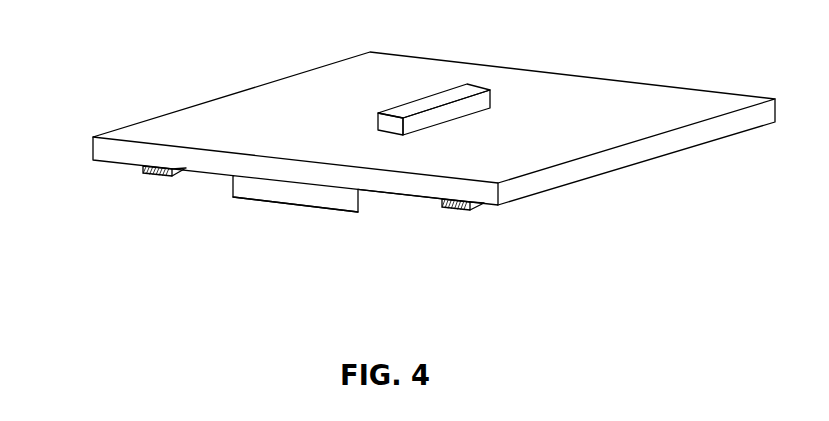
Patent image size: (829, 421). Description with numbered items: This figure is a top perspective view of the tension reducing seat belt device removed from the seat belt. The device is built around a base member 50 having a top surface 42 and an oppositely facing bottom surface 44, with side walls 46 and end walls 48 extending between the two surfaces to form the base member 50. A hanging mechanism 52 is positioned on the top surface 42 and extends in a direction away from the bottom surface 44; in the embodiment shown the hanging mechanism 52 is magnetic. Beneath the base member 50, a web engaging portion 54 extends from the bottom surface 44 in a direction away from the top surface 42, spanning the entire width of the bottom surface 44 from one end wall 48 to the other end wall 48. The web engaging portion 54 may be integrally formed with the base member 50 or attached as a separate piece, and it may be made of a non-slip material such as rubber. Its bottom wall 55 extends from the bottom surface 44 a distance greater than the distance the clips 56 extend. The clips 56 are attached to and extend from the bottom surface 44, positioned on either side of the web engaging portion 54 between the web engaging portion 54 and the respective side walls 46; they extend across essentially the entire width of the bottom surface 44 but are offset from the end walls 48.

The top surface 42 is at (414, 163).
The bottom surface 44 is at (418, 197).
The side walls 46 is at (328, 65).
The end walls 48 is at (457, 62).
The base member 50 is at (702, 80).
The hanging mechanism 52 is at (477, 99).
The web engaging portion 54 is at (315, 188).
The bottom wall 55 is at (252, 198).
The clips 56 is at (155, 182).